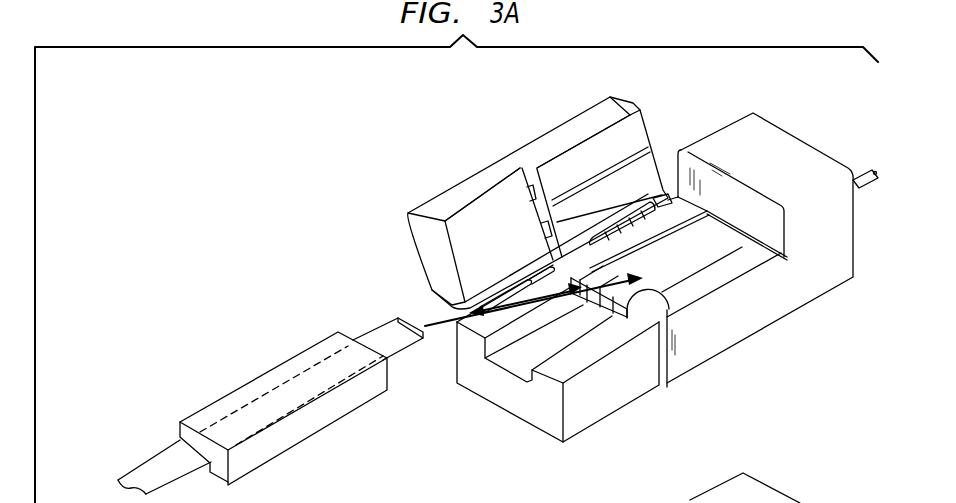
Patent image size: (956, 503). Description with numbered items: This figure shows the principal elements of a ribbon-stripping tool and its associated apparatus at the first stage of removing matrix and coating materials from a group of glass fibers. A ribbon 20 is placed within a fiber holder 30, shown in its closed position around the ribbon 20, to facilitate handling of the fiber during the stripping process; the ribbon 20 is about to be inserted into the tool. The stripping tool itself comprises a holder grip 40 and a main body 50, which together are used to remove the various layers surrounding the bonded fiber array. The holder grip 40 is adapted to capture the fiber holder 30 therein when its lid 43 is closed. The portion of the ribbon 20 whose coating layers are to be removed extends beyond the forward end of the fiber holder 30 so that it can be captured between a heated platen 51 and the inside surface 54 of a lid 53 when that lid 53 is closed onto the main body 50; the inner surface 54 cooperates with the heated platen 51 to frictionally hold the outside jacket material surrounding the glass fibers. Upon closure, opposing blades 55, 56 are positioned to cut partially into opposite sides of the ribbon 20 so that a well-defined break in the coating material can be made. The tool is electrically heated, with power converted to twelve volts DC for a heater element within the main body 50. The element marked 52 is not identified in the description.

The ribbon 20 is at (156, 462).
The fiber holder 30 is at (260, 375).
The holder grip 40 is at (608, 396).
The lid 43 is at (415, 193).
The main body 50 is at (800, 300).
The heated platen 51 is at (721, 233).
The hinge pin 52 is at (861, 170).
The lid 53 is at (571, 120).
The inner surface 54 is at (647, 158).
The blade 55 is at (643, 290).
The blade 56 is at (532, 206).